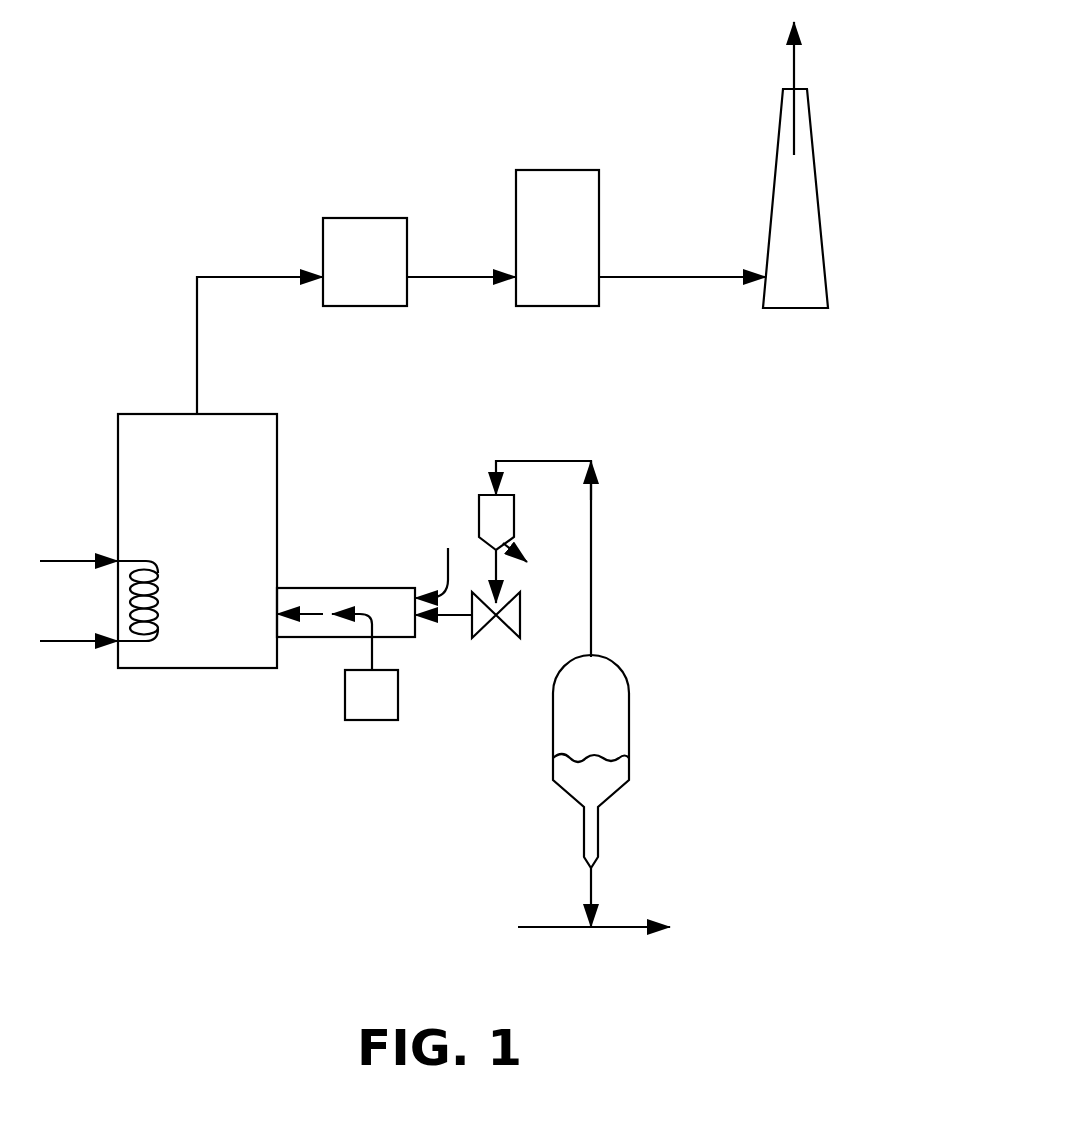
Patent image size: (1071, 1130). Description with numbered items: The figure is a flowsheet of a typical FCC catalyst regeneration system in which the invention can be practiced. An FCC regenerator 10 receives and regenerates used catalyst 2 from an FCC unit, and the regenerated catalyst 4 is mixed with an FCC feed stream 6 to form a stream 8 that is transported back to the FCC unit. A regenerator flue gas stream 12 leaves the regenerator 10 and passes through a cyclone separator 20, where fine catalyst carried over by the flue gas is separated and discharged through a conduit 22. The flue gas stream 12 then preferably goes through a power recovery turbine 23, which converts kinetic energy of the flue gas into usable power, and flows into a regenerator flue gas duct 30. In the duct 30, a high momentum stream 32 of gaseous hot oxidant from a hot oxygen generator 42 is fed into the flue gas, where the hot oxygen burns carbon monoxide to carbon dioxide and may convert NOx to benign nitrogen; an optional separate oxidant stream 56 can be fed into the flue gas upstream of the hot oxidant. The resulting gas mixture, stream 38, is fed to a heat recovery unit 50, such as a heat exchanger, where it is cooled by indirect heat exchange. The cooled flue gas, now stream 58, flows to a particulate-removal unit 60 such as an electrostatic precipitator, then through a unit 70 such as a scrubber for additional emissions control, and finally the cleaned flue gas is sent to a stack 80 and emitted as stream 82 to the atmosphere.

The used catalyst 2 is at (583, 796).
The regenerated catalyst 4 is at (593, 890).
The FCC feed stream 6 is at (542, 927).
The stream 8 is at (659, 928).
The FCC regenerator 10 is at (576, 722).
The regenerator flue gas stream 12 is at (548, 461).
The cyclone separator 20 is at (479, 522).
The conduit 22 is at (529, 566).
The power recovery turbine 23 is at (503, 638).
The regenerator flue gas duct 30 is at (372, 588).
The stream of gaseous hot oxidant 32 is at (360, 653).
The stream 38 is at (310, 614).
The hot oxygen generator 42 is at (356, 711).
The heat recovery unit 50 is at (172, 512).
The separate oxidant stream 56 is at (448, 575).
The flue gas stream 58 is at (238, 277).
The particulate-removal unit 60 is at (350, 276).
The unit 70 is at (542, 271).
The stack 80 is at (777, 291).
The stream 82 is at (790, 72).